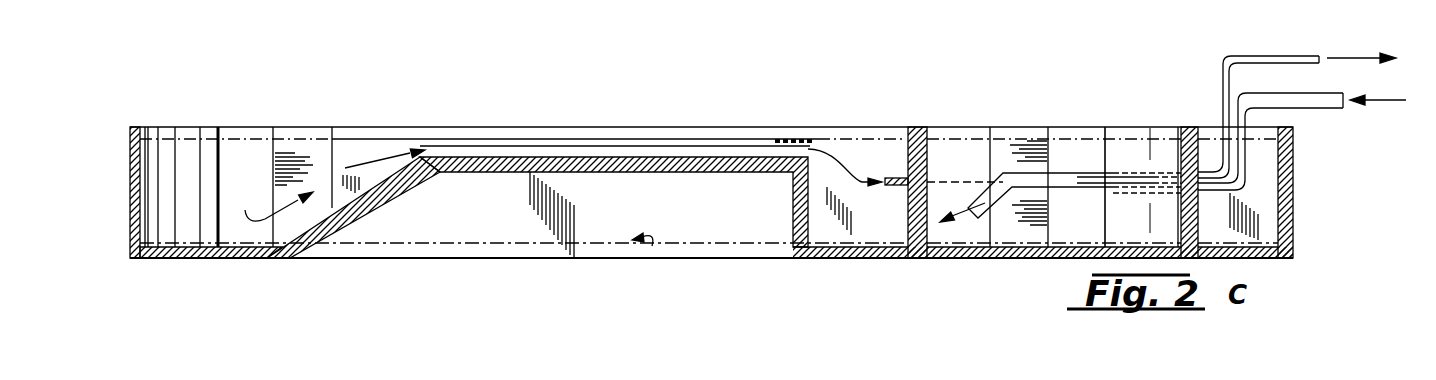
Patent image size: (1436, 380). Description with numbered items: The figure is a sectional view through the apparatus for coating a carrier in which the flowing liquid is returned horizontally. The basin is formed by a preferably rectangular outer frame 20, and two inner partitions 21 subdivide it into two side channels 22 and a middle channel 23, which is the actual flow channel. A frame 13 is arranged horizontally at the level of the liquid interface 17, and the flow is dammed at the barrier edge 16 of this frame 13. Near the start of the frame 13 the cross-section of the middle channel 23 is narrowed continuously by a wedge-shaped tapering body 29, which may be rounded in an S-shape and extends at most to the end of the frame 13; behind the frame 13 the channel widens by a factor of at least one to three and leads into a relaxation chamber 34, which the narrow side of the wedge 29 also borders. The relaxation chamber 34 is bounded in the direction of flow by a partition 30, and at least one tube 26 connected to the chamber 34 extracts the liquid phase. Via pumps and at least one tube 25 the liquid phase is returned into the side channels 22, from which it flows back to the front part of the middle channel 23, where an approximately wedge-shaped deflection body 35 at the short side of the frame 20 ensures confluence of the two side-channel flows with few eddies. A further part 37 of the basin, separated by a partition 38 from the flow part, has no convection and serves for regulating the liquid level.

The frame 13 is at (489, 143).
The barrier edge 16 is at (777, 138).
The liquid interface 17 is at (305, 137).
The outer frame 20 is at (899, 264).
The inner partitions 21 is at (362, 138).
The side channels 22 is at (646, 249).
The middle channel 23 is at (622, 152).
The tube 25 is at (1000, 210).
The tube 26 is at (897, 176).
The wedge-shaped tapering body 29 is at (373, 202).
The partition 30 is at (933, 150).
The relaxation chamber 34 is at (873, 228).
The wedge-shaped deflection body 35 is at (214, 162).
The part of the channel basin 37 is at (1266, 193).
The partition 38 is at (1174, 150).